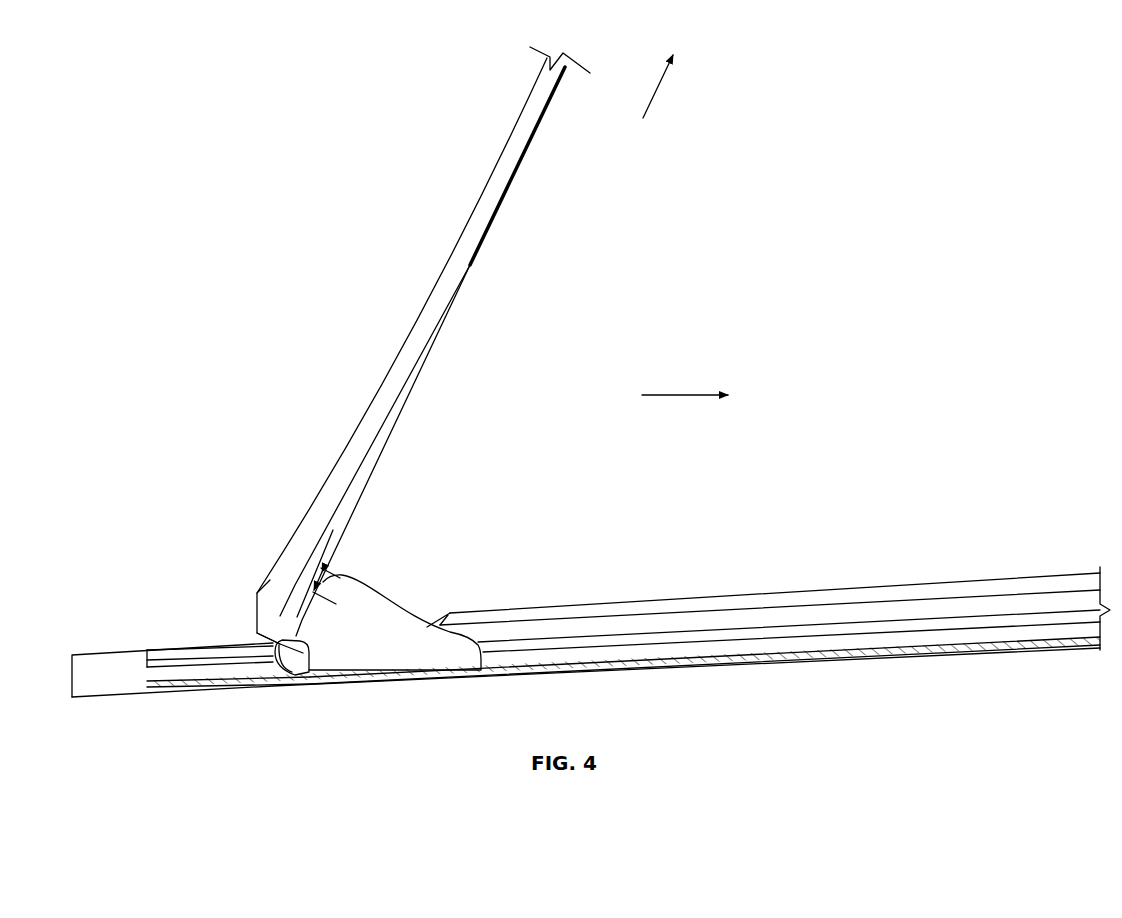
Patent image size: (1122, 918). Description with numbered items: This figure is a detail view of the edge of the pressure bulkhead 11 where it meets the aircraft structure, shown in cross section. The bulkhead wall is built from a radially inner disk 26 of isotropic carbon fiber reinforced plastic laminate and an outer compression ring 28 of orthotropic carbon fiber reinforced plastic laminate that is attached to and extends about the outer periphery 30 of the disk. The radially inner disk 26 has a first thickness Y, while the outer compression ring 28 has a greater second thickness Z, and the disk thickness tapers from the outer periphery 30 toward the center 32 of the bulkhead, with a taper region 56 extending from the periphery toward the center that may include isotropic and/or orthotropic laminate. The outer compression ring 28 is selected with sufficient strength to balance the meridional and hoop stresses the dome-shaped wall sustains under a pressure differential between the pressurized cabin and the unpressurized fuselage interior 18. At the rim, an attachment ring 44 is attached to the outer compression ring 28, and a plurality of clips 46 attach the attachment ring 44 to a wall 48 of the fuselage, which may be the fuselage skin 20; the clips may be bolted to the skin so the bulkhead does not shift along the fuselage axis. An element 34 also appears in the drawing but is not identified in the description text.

The pressure bulkhead 11 is at (436, 388).
The unpressurized fuselage interior 18 is at (673, 394).
The fuselage skin 20 is at (903, 655).
The radially inner disk 26 is at (533, 142).
The outer compression ring 28 is at (270, 624).
The outer periphery 30 is at (331, 540).
The center 32 is at (660, 87).
The gap between cover and display 34 is at (286, 576).
The attachment ring 44 is at (280, 674).
The clips 46 is at (372, 652).
The wall 48 is at (108, 682).
The taper region 56 is at (413, 247).
The first thickness Y is at (507, 193).
The second thickness Z is at (334, 586).